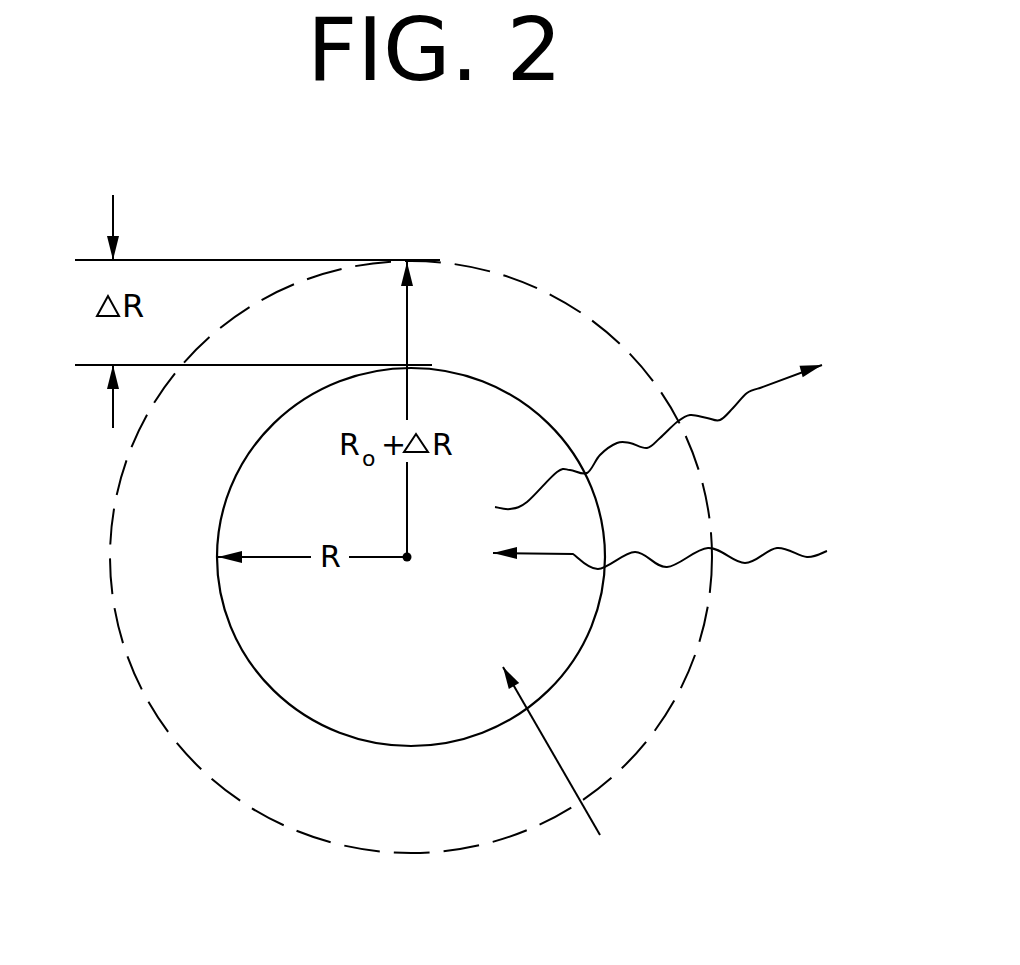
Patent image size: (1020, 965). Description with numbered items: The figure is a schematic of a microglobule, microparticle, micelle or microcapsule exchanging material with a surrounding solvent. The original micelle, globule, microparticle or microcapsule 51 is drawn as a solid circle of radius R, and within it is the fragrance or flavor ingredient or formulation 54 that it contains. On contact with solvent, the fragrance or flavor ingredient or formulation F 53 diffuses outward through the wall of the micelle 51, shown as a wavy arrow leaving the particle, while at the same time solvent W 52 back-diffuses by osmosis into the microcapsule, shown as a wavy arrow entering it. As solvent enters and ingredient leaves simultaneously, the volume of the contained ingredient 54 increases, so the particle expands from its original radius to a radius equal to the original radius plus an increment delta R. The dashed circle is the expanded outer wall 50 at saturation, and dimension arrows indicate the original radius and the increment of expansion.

The outer wall 50 is at (530, 287).
The original micelle 51 is at (280, 698).
The solvent W 52 is at (745, 563).
The fragrance or flavor ingredient or formulation F 53 is at (764, 388).
The fragrance or flavor ingredient or formulation 54 is at (582, 772).